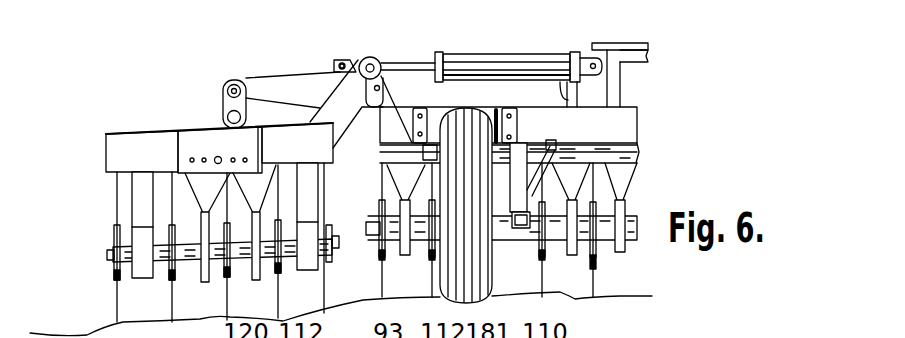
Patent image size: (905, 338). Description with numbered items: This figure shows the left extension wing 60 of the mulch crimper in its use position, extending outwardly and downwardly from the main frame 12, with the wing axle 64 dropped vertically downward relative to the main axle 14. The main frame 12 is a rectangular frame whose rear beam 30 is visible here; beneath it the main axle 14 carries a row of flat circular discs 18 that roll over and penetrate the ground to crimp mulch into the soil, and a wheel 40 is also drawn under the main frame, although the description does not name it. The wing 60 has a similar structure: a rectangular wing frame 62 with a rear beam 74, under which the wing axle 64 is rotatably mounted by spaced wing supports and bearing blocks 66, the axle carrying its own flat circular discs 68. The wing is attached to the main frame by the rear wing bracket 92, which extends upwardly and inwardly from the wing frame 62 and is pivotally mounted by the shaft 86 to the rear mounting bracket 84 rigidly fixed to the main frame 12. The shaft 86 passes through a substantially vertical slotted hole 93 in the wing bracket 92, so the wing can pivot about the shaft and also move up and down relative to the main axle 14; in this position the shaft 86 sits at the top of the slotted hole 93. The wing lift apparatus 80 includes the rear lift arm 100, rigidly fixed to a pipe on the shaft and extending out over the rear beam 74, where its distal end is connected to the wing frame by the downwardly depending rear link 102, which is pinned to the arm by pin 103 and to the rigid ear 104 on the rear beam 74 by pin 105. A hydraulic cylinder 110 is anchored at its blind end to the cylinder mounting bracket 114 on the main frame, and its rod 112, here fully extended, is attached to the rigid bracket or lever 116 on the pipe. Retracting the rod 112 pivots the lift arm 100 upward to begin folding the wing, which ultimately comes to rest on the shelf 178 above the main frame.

The main frame 12 is at (641, 122).
The main axle 14 is at (604, 240).
The flat circular discs 18 is at (560, 290).
The rear beam 30 is at (540, 95).
The gauge wheel 40 is at (492, 265).
The left extension wing 60 is at (156, 72).
The wing frame 62 is at (105, 171).
The wing axle 64 is at (268, 265).
The wing supports and bearing blocks 66 is at (313, 267).
The flat circular discs 68 is at (173, 297).
The rear beam 74 is at (106, 133).
The wing lift apparatus 80 is at (342, 40).
The rear mounting bracket 84 is at (395, 100).
The shaft 86 is at (381, 62).
The rear wing bracket 92 is at (333, 67).
The slotted hole 93 is at (384, 90).
The rear lift arm 100 is at (273, 78).
The rear link 102 is at (223, 100).
The pin 103 is at (228, 86).
The rigid ear 104 is at (222, 127).
The pin 105 is at (228, 117).
The hydraulic cylinder 110 is at (514, 54).
The rod 112 is at (413, 62).
The cylinder mounting bracket 114 is at (608, 84).
The rigid bracket or lever 116 is at (337, 60).
The shelf 178 is at (618, 47).